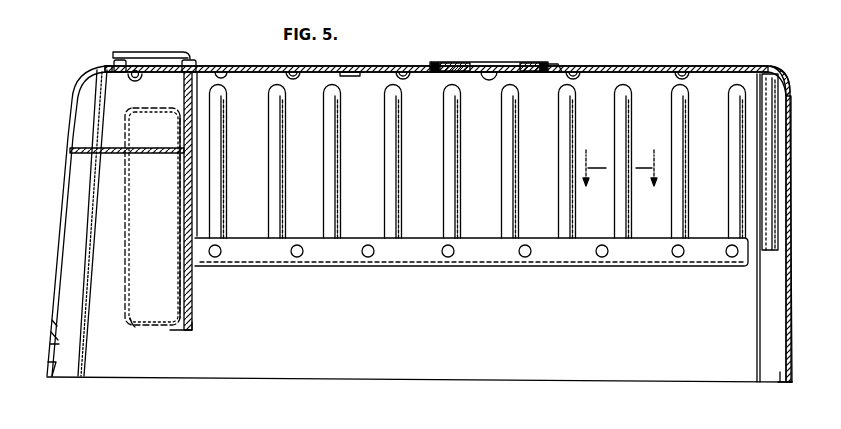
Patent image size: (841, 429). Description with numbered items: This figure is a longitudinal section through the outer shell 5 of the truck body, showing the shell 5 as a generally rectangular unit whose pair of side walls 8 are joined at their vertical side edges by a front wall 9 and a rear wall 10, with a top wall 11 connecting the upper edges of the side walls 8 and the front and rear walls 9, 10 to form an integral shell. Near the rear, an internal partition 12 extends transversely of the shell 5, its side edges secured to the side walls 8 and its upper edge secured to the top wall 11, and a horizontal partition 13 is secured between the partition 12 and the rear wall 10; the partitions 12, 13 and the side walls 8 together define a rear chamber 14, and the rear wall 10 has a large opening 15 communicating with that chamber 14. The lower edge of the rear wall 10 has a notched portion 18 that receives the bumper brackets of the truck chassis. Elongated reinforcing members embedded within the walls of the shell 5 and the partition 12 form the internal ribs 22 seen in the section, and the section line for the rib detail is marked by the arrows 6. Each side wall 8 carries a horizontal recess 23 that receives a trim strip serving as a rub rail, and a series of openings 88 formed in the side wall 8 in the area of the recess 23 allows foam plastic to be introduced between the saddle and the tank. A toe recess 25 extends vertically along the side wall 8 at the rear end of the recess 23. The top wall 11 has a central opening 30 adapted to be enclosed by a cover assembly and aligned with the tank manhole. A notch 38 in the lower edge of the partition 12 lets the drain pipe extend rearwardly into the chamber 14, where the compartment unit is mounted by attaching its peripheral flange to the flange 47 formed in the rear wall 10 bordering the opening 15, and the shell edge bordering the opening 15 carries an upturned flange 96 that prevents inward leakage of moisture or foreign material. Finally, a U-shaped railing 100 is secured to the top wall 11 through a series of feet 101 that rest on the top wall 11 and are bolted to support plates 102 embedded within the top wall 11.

The shell 5 is at (722, 66).
The section line 6 is at (619, 164).
The side walls 8 is at (429, 323).
The front wall 9 is at (790, 372).
The rear wall 10 is at (72, 112).
The top wall 11 is at (622, 66).
The internal partition 12 is at (180, 190).
The horizontal partition 13 is at (156, 148).
The rear chamber 14 is at (83, 152).
The opening 15 is at (58, 198).
The notched portion 18 is at (49, 378).
The internal ribs 22 is at (262, 113).
The horizontal recess 23 is at (355, 266).
The toe recess 25 is at (135, 326).
The central opening 30 is at (541, 64).
The notch 38 is at (192, 305).
The flange 47 is at (52, 316).
The openings 88 is at (220, 256).
The upturned flange 96 is at (552, 65).
The U-shaped railing 100 is at (152, 52).
The feet 101 is at (117, 63).
The support plates 102 is at (185, 88).